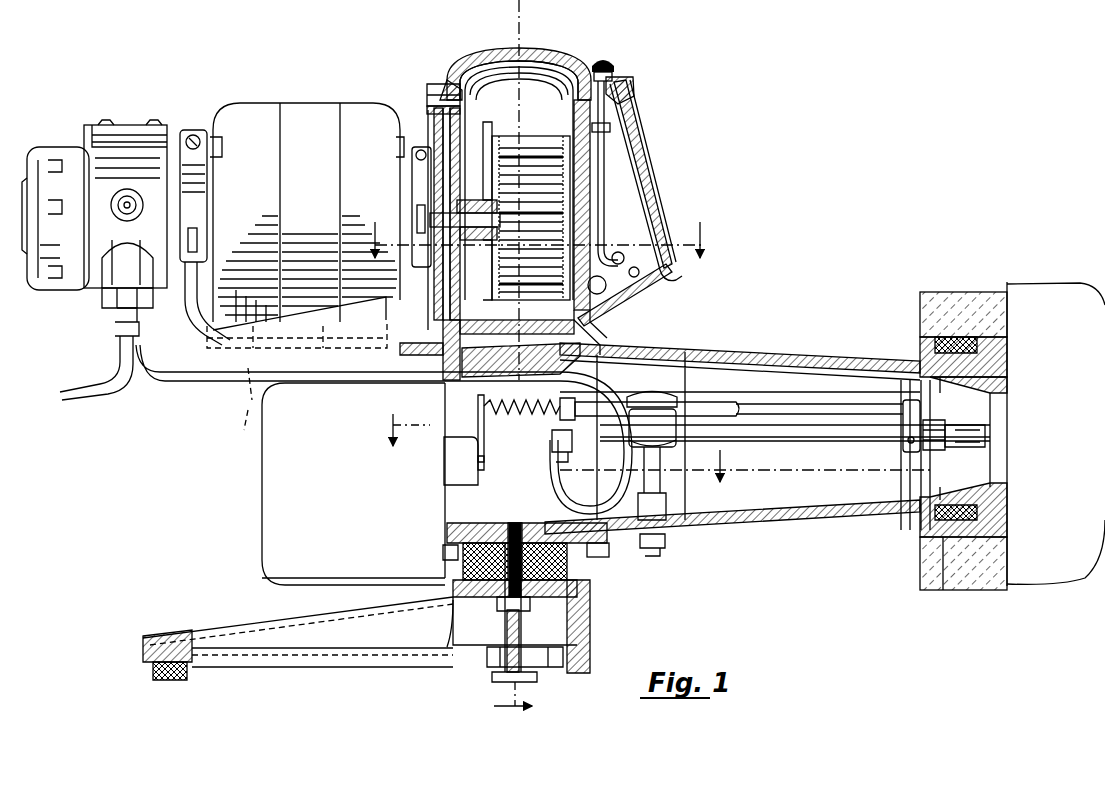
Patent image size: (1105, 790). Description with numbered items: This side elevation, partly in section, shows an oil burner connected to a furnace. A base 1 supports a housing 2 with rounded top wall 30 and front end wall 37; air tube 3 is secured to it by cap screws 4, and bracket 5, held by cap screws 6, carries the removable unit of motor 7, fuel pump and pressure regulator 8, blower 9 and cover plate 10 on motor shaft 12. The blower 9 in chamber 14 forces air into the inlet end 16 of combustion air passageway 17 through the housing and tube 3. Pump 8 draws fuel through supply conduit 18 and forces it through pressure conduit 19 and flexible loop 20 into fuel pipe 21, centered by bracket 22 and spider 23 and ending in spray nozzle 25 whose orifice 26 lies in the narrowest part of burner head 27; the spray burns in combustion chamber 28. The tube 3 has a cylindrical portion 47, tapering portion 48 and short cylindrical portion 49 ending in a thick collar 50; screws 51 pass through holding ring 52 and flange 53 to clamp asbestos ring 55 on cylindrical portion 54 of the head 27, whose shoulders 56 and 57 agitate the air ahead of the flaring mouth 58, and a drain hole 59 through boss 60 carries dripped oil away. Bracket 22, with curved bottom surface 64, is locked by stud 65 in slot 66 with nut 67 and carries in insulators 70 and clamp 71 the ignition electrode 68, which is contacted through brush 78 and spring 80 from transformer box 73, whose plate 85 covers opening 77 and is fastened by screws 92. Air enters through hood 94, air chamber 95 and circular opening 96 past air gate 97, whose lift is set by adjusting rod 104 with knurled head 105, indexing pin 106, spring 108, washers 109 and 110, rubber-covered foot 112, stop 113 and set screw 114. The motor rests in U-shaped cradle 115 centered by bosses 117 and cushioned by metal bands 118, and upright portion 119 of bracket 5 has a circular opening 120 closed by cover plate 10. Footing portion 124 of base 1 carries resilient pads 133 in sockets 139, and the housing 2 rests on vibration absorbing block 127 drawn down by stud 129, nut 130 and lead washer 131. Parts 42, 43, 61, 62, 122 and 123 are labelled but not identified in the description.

The pedestal or base 1 is at (578, 602).
The main body portion or housing 2 is at (480, 58).
The air or blast tube 3 is at (768, 352).
The cap screws or studs 4 is at (624, 582).
The supporting member or bracket 5 is at (236, 350).
The cap screws or studs 6 is at (430, 90).
The motor 7 is at (296, 103).
The fuel pump and pressure regulator 8 is at (126, 125).
The blower 9 is at (486, 145).
The cover plate 10 is at (432, 125).
The shaft 12 is at (480, 214).
The chamber 14 is at (552, 138).
The inlet end 16 is at (526, 512).
The combustion air passageway 17 is at (738, 345).
The supply conduit 18 is at (95, 380).
The fuel pressure conduit 19 is at (157, 384).
The flexible loop 20 is at (638, 392).
The fuel pipe 21 is at (790, 444).
The bracket 22 is at (662, 490).
The spider 23 is at (900, 468).
The spray nozzle 25 is at (946, 447).
The outlet orifice 26 is at (990, 440).
The burner head 27 is at (1008, 372).
The combustion chamber 28 is at (1088, 418).
The top wall 30 is at (510, 46).
The front end wall 37 is at (590, 340).
The inner wall 42 is at (521, 360).
The base block 43 is at (480, 520).
The cylindrical portion 47 is at (700, 350).
The tapering portion 48 is at (784, 516).
The second cylindrical portion 49 is at (900, 494).
The annular collar 50 is at (908, 520).
The screws 51 is at (1008, 516).
The annular holding ring 52 is at (1008, 538).
The flange 53 is at (942, 590).
The external cylindrical portion 54 is at (910, 398).
The annular ring 55 is at (922, 532).
The circular shoulder 56 is at (932, 482).
The shoulder 57 is at (995, 462).
The outlet or mouth 58 is at (996, 480).
The passage or drill hole 59 is at (1000, 492).
The depending boss 60 is at (1000, 500).
The upper flange 61 is at (922, 350).
The flange bolt 62 is at (1010, 350).
The curved bottom surface 64 is at (668, 540).
The threaded stud 65 is at (658, 552).
The elongated slot 66 is at (640, 555).
The nut 67 is at (676, 546).
The ignition electrode 68 is at (810, 406).
The porcelain insulators 70 is at (738, 406).
The clamp 71 is at (646, 396).
The transformer box 73 is at (320, 518).
The opening 77 is at (476, 404).
The brush 78 is at (484, 466).
The helical compression springs 80 is at (552, 442).
The flat plate 85 is at (444, 486).
The fillister head screws 92 is at (444, 468).
The hood 94 is at (685, 150).
The air chamber 95 is at (656, 178).
The circular opening 96 is at (648, 162).
The air gate 97 is at (678, 280).
The adjusting rod 104 is at (606, 156).
The knurled head 105 is at (603, 56).
The indexing pin 106 is at (612, 78).
The helical compression spring 108 is at (636, 104).
The washer 109 is at (636, 110).
The washer 110 is at (574, 108).
The rubber covering 112 is at (616, 252).
The stop 113 is at (634, 290).
The set screw 114 is at (636, 90).
The cradle 115 is at (190, 322).
The raised tracks or bosses 117 is at (316, 366).
The metal bands 118 is at (205, 150).
The upright portion 119 is at (448, 82).
The circular opening 120 is at (452, 300).
The washer 122 is at (432, 110).
The base plate 123 is at (462, 612).
The footing portion 124 is at (300, 670).
The vibration absorbing block 127 is at (628, 560).
The stud 129 is at (530, 672).
The nut 130 is at (545, 665).
The washer 131 is at (570, 572).
The pads or cushions 133 is at (160, 680).
The sockets 139 is at (185, 682).